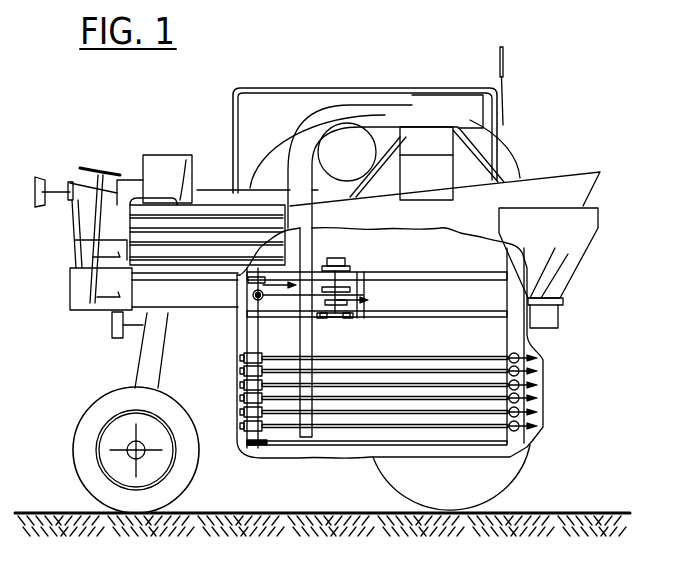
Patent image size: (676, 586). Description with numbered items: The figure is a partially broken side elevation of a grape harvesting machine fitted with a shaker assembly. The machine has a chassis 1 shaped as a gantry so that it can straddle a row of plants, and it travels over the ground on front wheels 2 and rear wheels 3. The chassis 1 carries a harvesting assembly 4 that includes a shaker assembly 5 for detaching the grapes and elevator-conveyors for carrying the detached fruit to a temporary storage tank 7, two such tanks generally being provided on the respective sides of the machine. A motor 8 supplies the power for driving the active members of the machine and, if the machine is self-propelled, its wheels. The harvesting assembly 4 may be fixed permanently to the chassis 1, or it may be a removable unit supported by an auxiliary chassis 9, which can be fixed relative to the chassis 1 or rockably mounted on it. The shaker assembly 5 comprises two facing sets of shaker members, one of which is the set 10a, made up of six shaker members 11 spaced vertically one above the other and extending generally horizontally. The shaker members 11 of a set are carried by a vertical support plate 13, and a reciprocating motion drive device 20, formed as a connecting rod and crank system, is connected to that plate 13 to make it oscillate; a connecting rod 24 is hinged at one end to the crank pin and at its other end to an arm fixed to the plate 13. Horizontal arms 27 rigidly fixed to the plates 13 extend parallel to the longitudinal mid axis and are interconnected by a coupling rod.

The chassis 1 is at (210, 315).
The front wheels 2 is at (82, 457).
The rear wheels 3 is at (510, 470).
The harvesting assembly 4 is at (230, 393).
The shaker assembly 5 is at (391, 348).
The temporary storage tank 7 is at (560, 187).
The motor 8 is at (213, 183).
The auxiliary chassis 9 is at (400, 270).
The set of shaker members 10a is at (413, 352).
The shaker members 11 is at (368, 387).
The support plate 13 is at (255, 338).
The reciprocating motion drive device 20 is at (373, 295).
The connecting rod 24 is at (290, 300).
The horizontal arms 27 is at (277, 280).